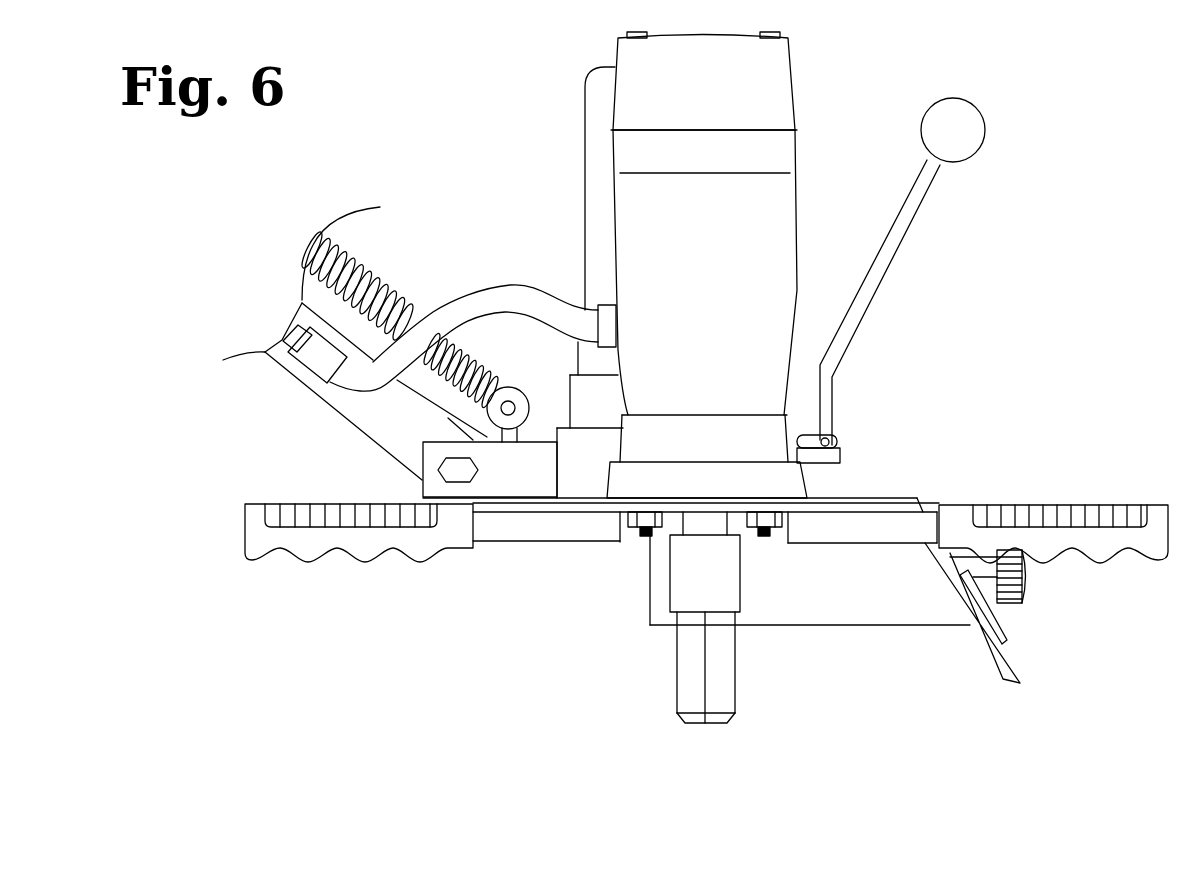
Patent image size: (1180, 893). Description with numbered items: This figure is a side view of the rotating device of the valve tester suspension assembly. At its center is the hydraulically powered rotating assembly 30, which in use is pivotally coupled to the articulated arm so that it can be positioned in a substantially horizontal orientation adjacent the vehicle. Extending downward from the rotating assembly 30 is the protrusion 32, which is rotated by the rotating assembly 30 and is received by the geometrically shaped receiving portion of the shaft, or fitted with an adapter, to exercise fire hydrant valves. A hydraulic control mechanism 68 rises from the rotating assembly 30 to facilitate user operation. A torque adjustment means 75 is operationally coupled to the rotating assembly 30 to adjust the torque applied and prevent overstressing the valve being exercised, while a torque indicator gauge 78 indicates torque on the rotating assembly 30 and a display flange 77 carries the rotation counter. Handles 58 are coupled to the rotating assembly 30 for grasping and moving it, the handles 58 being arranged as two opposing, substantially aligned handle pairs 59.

The rotating assembly 30 is at (768, 88).
The protrusion 32 is at (718, 678).
The handles 58 is at (320, 543).
The handle pairs 59 is at (478, 558).
The hydraulic control mechanism 68 is at (917, 198).
The torque adjustment means 75 is at (865, 605).
The display flange 77 is at (1005, 670).
The torque indicator gauge 78 is at (993, 622).